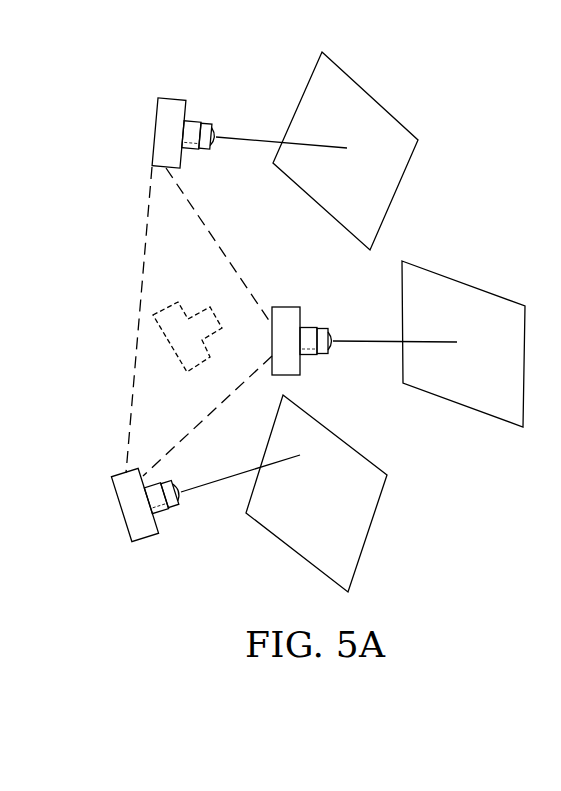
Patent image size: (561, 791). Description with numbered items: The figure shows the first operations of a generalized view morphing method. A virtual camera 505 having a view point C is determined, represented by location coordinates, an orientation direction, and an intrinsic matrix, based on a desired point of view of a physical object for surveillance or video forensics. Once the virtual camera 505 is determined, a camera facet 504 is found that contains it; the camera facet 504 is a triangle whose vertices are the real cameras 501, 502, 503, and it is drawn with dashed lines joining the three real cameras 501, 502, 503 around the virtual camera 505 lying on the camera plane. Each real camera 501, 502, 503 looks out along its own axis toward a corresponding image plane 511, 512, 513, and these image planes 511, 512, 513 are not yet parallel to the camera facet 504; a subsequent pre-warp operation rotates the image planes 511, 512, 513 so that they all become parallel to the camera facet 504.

The real camera 501 is at (157, 122).
The real camera 502 is at (287, 307).
The real camera 503 is at (122, 513).
The camera facet 504 is at (131, 386).
The virtual camera 505 is at (187, 318).
The image plane 511 is at (392, 72).
The image plane 512 is at (462, 280).
The image plane 513 is at (370, 533).